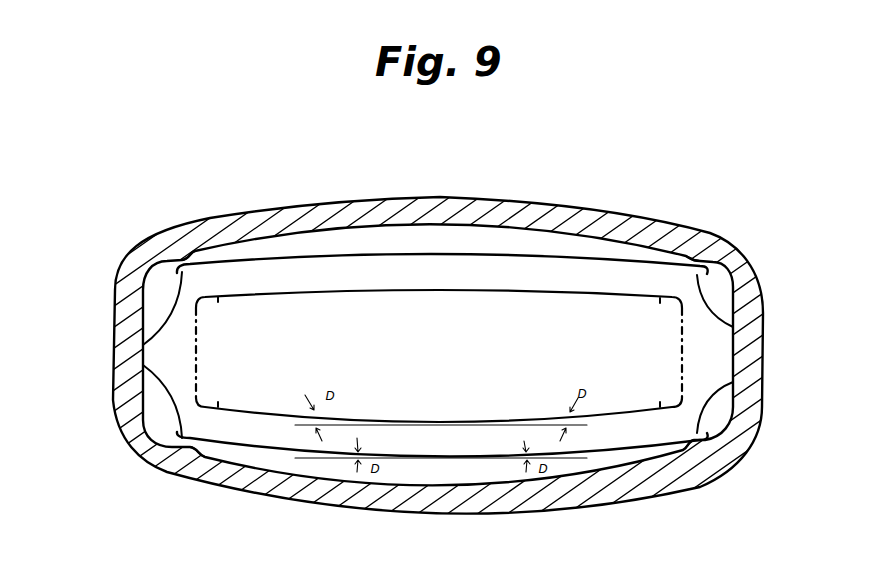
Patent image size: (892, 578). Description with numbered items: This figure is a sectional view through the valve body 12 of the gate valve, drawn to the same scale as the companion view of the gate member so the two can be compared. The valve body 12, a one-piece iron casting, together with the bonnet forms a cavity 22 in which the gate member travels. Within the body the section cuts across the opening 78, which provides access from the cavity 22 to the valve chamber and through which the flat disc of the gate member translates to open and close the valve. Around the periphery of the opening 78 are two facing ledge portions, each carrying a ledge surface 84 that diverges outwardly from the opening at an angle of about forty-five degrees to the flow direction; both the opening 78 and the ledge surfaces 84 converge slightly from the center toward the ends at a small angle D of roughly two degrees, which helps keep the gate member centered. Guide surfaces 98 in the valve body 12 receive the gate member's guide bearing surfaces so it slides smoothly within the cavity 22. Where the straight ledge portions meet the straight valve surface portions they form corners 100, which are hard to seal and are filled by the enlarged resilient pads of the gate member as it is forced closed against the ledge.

The valve body 12 is at (586, 205).
The cavity 22 is at (354, 240).
The opening 78 is at (486, 347).
The ledge surface 84 is at (451, 264).
The guide surface 98 is at (170, 437).
The corner 100 is at (190, 275).